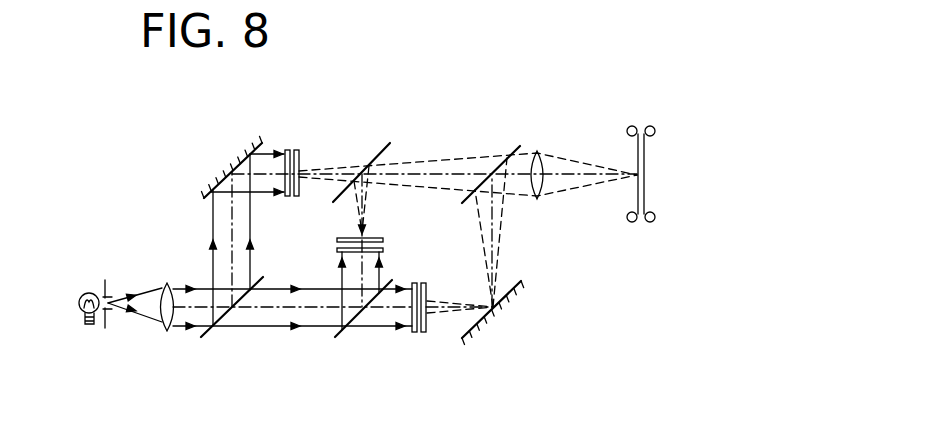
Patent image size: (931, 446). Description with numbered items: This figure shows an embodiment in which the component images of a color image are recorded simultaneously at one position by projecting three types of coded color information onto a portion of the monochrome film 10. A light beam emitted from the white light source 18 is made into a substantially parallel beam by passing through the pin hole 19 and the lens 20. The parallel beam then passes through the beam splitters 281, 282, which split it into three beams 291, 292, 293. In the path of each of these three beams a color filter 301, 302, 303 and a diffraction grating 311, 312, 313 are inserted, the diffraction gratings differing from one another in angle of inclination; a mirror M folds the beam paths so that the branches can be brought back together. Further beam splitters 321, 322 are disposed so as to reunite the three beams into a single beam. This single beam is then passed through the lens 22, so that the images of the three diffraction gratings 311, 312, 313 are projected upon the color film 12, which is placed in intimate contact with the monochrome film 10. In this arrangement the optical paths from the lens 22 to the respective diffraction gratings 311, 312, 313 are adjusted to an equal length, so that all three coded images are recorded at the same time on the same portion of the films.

The monochrome film 10 is at (650, 222).
The color film 12 is at (632, 222).
The white light source 18 is at (81, 296).
The pin hole 19 is at (110, 308).
The lens 20 is at (166, 282).
The lens 22 is at (537, 199).
The beam splitter 281 is at (224, 315).
The beam splitter 282 is at (352, 320).
The beam 291 is at (383, 330).
The beam 292 is at (338, 275).
The beam 293 is at (282, 150).
The color filter 301 is at (420, 283).
The color filter 302 is at (383, 250).
The color filter 303 is at (288, 150).
The diffraction grating 311 is at (424, 333).
The diffraction grating 312 is at (383, 238).
The diffraction grating 313 is at (298, 152).
The beam splitter 321 is at (386, 143).
The beam splitter 322 is at (506, 155).
The mirror M is at (223, 168).